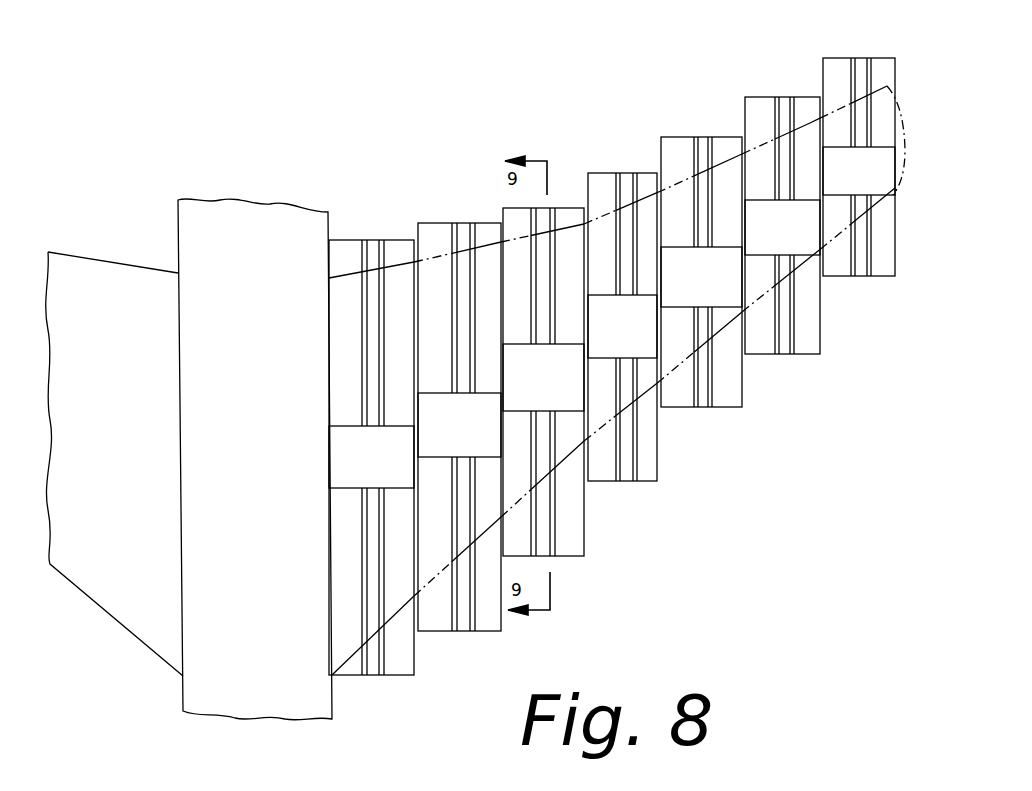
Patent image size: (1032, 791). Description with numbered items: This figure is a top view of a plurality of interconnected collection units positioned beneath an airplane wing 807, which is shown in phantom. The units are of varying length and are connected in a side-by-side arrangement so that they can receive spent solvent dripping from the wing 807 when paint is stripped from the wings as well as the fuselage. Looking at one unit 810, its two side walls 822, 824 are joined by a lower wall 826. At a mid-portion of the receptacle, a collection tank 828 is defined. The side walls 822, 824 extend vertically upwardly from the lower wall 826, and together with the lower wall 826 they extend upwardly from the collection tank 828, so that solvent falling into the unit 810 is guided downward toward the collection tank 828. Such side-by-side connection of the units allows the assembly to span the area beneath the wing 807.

The wing 807 is at (903, 80).
The unit 810 is at (569, 186).
The side wall 822 is at (572, 521).
The side wall 824 is at (503, 210).
The lower wall 826 is at (553, 296).
The collection tank 828 is at (560, 390).